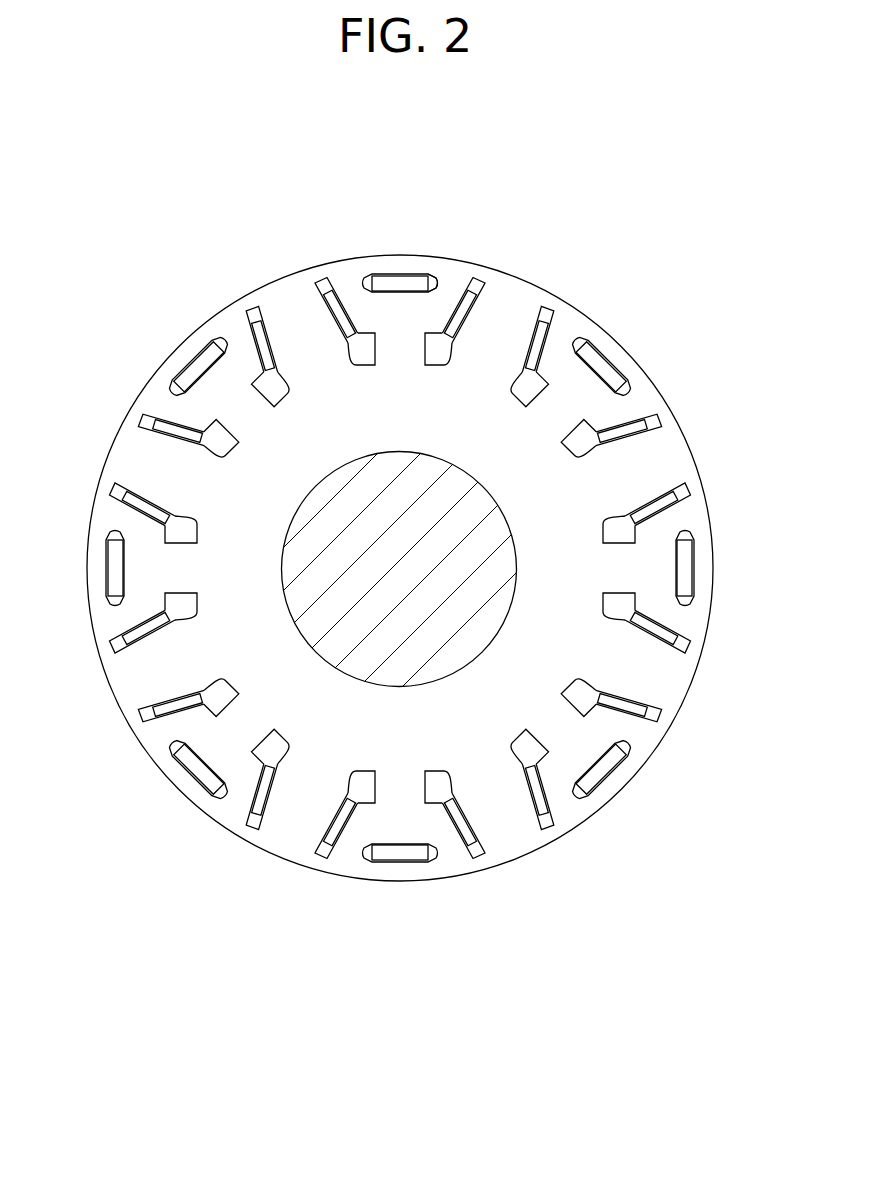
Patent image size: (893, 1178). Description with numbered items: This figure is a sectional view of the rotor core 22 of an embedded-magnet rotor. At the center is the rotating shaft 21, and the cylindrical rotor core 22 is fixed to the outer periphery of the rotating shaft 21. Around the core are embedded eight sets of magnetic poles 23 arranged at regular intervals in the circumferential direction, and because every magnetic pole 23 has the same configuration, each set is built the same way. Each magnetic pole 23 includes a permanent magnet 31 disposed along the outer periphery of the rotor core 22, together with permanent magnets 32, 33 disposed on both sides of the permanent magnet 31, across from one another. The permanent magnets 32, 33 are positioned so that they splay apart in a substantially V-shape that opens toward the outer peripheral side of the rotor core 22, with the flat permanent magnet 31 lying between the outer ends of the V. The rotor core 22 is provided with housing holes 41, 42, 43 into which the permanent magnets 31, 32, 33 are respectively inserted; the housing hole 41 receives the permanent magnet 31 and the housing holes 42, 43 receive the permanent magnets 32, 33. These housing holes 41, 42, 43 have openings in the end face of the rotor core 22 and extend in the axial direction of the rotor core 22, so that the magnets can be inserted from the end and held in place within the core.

The rotating shaft 21 is at (476, 600).
The rotor core 22 is at (520, 292).
The magnetic pole 23 is at (383, 253).
The permanent magnet 31 is at (400, 276).
The permanent magnet 32 is at (467, 317).
The permanent magnet 33 is at (333, 317).
The housing hole 41 is at (444, 271).
The housing hole 42 is at (447, 382).
The housing hole 43 is at (343, 379).